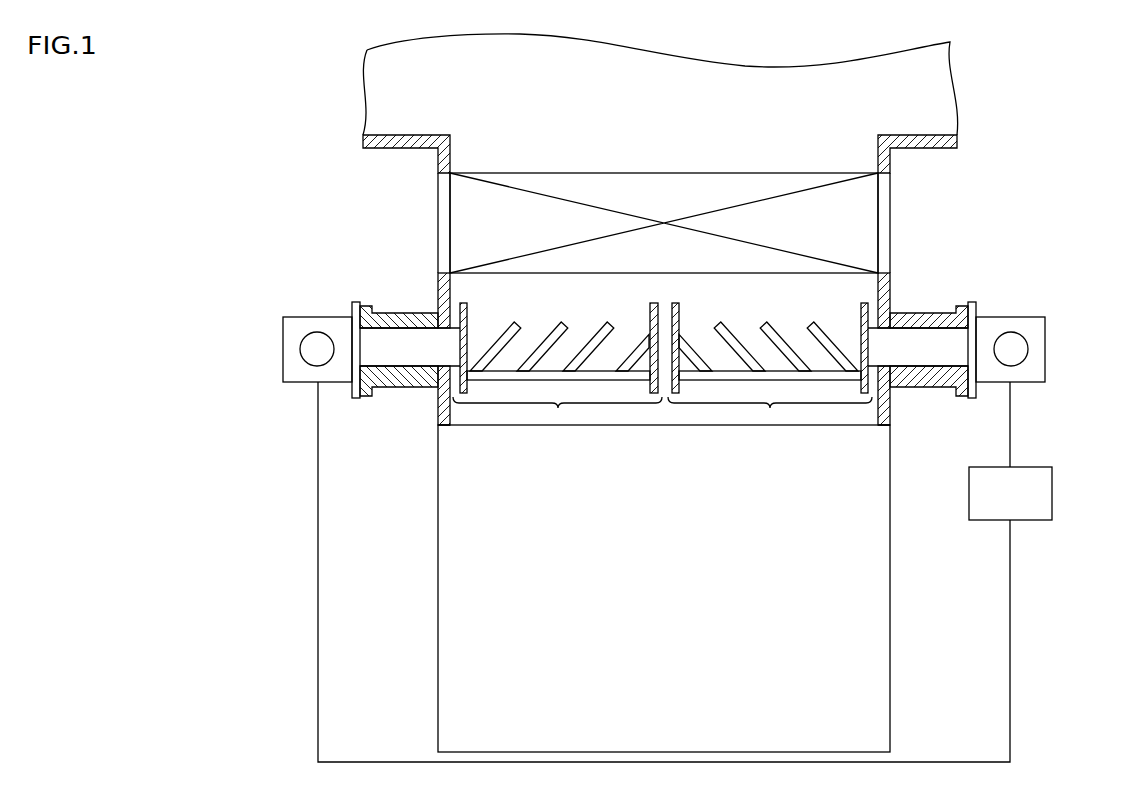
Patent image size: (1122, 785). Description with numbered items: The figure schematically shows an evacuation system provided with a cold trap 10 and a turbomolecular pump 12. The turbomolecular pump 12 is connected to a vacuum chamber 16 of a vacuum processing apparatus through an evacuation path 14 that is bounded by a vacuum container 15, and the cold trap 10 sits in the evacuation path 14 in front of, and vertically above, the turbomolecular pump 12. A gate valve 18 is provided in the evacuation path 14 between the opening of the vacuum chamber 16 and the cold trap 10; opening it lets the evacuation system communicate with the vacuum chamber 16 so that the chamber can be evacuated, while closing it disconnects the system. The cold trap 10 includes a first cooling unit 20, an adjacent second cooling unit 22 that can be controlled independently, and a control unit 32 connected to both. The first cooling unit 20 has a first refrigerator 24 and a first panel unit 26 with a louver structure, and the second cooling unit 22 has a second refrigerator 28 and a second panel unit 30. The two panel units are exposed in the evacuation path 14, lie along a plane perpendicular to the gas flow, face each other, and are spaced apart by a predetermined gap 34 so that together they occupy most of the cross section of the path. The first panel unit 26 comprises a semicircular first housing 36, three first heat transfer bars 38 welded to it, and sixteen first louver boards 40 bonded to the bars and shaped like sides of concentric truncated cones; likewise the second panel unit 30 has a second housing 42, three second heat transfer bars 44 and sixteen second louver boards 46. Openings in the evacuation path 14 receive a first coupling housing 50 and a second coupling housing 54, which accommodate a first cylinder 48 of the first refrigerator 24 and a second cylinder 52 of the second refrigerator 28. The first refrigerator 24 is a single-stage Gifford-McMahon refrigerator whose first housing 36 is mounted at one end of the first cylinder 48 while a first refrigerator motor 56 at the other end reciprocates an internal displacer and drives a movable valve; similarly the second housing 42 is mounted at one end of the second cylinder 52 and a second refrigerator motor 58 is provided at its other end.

The cold trap 10 is at (428, 417).
The turbomolecular pump 12 is at (437, 596).
The evacuation path 14 is at (437, 280).
The vacuum container 15 is at (442, 428).
The vacuum chamber 16 is at (382, 103).
The gate valve 18 is at (455, 207).
The first cooling unit 20 is at (367, 350).
The second cooling unit 22 is at (979, 341).
The first refrigerator 24 is at (297, 320).
The first panel unit 26 is at (557, 360).
The second refrigerator 28 is at (1032, 328).
The second panel unit 30 is at (770, 360).
The control unit 32 is at (1055, 488).
The gap 34 is at (665, 315).
The first housing 36 is at (466, 332).
The first heat transfer bars 38 is at (503, 377).
The first louver boards 40 is at (553, 335).
The second housing 42 is at (674, 303).
The second heat transfer bars 44 is at (825, 377).
The second louver boards 46 is at (775, 335).
The first cylinder 48 is at (388, 343).
The first coupling housing 50 is at (395, 385).
The second cylinder 52 is at (935, 360).
The second coupling housing 54 is at (925, 313).
The first refrigerator motor 56 is at (293, 368).
The second refrigerator motor 58 is at (1046, 362).